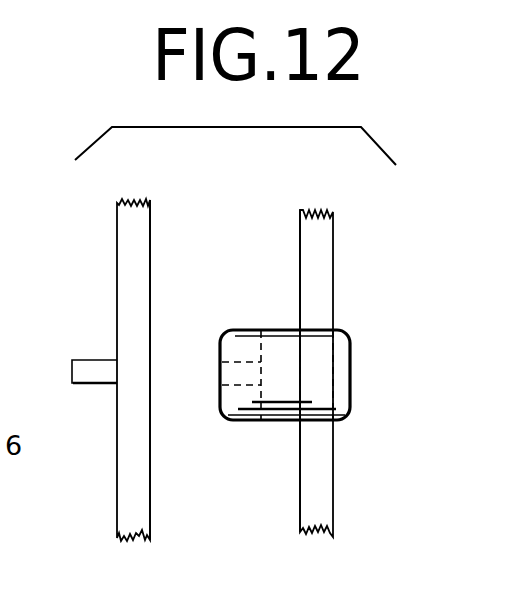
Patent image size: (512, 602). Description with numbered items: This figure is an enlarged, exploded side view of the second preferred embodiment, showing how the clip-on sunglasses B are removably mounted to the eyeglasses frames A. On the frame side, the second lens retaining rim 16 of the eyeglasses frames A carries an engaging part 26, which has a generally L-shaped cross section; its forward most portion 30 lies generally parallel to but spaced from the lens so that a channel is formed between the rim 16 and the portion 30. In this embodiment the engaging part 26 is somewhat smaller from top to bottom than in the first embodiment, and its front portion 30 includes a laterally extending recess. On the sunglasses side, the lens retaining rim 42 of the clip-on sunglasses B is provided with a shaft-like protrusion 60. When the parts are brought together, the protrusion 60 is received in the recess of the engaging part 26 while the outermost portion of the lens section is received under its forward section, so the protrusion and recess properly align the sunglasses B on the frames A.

The lens retaining rim 42 is at (117, 237).
The second lens retaining rim 16 is at (300, 281).
The engaging part 26 is at (350, 365).
The forward most portion 30 is at (221, 366).
The protrusion 60 is at (95, 386).
The eyeglasses frames A is at (300, 500).
The clip-on sunglasses B is at (152, 253).